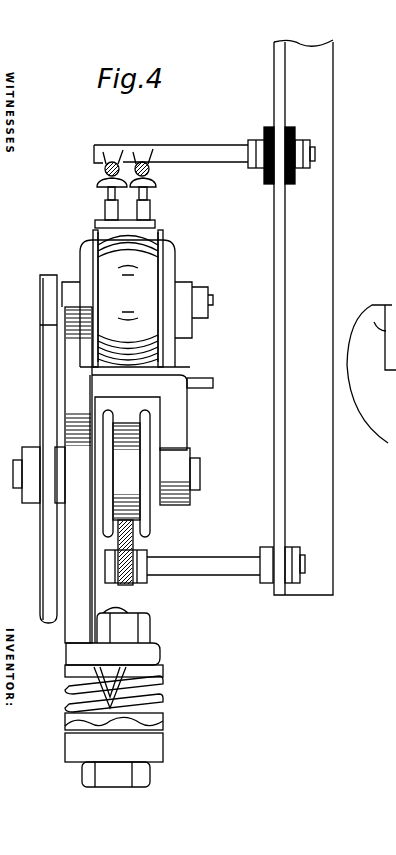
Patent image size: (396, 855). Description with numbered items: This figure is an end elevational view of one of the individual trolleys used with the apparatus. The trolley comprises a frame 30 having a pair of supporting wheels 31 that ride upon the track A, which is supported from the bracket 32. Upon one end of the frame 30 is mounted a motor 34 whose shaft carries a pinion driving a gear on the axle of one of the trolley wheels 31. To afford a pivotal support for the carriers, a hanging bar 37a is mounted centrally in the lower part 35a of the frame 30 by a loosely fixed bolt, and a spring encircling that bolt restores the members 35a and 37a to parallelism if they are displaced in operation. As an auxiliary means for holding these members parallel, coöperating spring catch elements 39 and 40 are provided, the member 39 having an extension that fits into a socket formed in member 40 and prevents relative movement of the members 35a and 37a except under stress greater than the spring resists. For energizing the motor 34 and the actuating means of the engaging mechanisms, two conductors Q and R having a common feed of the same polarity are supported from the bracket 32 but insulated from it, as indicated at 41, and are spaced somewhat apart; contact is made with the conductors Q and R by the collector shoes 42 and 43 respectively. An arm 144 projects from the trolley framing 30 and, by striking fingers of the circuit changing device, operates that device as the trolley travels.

The conductor Q is at (100, 172).
The conductor R is at (149, 173).
The insulation 41 is at (265, 130).
The collector shoe 42 is at (103, 186).
The collector shoe 43 is at (152, 186).
The motor 34 is at (148, 272).
The arm 144 is at (205, 388).
The frame 30 is at (190, 445).
The supporting wheel 31 is at (137, 522).
The bracket 32 is at (318, 515).
The track A is at (133, 583).
The lower part of the frame 35a is at (145, 653).
The spring catch element 39 is at (163, 690).
The spring catch element 40 is at (140, 727).
The hanging bar 37a is at (152, 747).